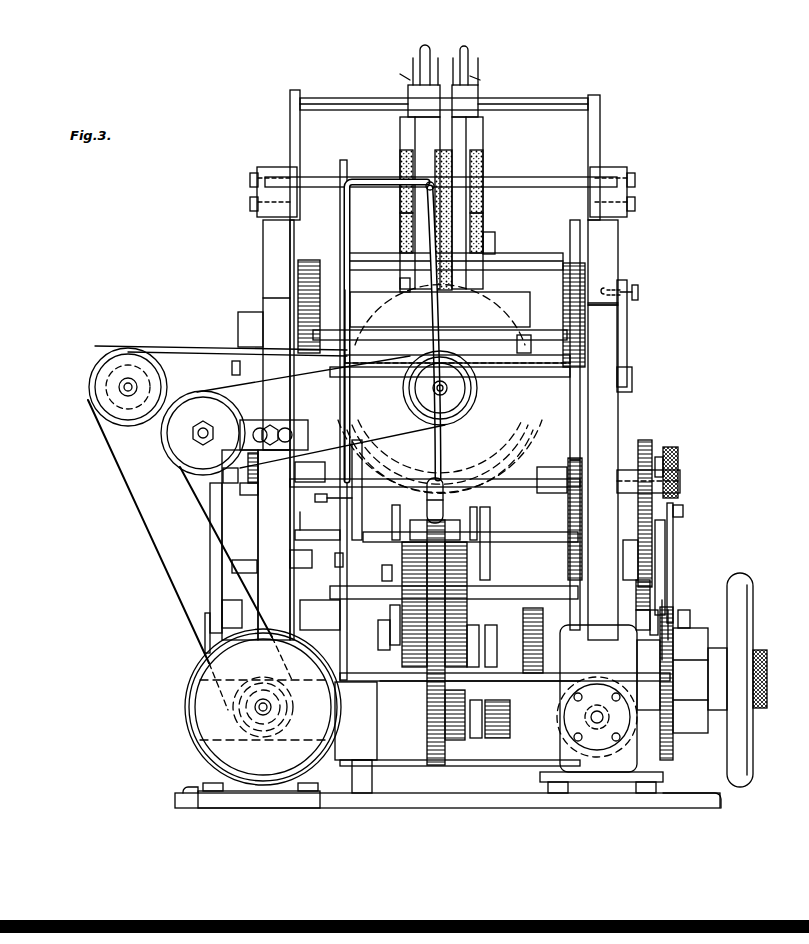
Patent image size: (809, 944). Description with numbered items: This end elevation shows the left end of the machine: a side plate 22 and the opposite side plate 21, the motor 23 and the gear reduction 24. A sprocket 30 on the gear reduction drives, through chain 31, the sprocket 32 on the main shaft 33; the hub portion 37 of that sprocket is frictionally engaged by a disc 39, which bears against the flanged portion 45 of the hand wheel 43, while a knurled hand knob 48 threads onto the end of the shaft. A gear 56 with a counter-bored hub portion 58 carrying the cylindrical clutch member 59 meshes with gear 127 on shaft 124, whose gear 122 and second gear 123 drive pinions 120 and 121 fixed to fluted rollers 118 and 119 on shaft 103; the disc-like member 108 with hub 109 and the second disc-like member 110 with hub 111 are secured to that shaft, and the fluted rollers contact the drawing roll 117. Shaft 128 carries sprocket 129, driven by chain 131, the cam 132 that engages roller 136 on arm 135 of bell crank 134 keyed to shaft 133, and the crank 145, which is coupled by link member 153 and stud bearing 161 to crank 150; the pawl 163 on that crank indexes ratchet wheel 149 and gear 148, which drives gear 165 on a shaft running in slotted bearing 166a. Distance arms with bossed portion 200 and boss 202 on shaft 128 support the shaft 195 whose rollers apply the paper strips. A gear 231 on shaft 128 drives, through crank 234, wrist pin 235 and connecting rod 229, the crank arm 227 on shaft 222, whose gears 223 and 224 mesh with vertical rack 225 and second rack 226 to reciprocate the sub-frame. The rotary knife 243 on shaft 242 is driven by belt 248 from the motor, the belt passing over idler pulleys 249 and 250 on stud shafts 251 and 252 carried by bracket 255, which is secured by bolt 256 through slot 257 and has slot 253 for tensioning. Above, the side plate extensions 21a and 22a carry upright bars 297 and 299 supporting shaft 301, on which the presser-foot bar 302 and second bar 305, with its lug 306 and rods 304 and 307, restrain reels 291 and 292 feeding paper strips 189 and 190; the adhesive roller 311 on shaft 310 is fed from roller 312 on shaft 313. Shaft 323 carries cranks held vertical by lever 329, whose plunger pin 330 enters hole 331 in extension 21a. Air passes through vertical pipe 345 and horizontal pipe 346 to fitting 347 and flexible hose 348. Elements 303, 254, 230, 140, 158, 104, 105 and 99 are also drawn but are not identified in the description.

The rod 307 is at (420, 46).
The rod 304 is at (467, 47).
The second bar 305 is at (400, 74).
The reel 292 is at (413, 68).
The reel 291 is at (478, 66).
The bar 302 is at (480, 76).
The lug 306 is at (408, 92).
The cross head 303 is at (478, 96).
The shaft 301 is at (520, 100).
The upright bar 299 is at (298, 133).
The upright bar 297 is at (600, 133).
The horizontal pipe 346 is at (378, 180).
The roller 311 is at (483, 160).
The shaft 310 is at (525, 182).
The fitting 347 is at (424, 192).
The vertical pipe 345 is at (350, 250).
The roller 312 is at (485, 222).
The second rack 226 is at (310, 262).
The paper strip 190 is at (400, 232).
The paper strip 189 is at (483, 236).
The shaft 313 is at (522, 258).
The vertical rack 225 is at (572, 263).
The side plate extension 22a is at (268, 248).
The side plate extension 21a is at (610, 252).
The flexible hose 348 is at (400, 282).
The block 254 is at (500, 294).
The plunger pin 330 is at (638, 292).
The gear 224 is at (340, 306).
The shaft 222 is at (540, 335).
The hole 331 is at (620, 298).
The crank arm 227 is at (240, 335).
The gear 223 is at (531, 340).
The lever 329 is at (627, 350).
The stud shaft 251 is at (128, 380).
The idler pulley 249 is at (140, 375).
The bearing block 230 is at (232, 368).
The connecting rod 229 is at (248, 388).
The slot 257 is at (282, 410).
The shaft 323 is at (388, 365).
The shaft 242 is at (452, 390).
The rotary knife 243 is at (528, 412).
The side plate 21 is at (607, 430).
The slot 253 is at (93, 400).
The idler pulley 250 is at (168, 440).
The bracket 255 is at (300, 426).
The bolt 256 is at (296, 450).
The stud shaft 252 is at (196, 445).
The wrist pin 235 is at (223, 475).
The gear 231 is at (258, 472).
The boss 202 is at (280, 472).
The crank 234 is at (258, 485).
The side plate 22 is at (256, 545).
The sprocket 129 is at (565, 465).
The shaft 128 is at (612, 434).
The cam 132 is at (368, 484).
The nozzle 140 is at (445, 505).
The drawing roll 117 is at (470, 515).
The shaft 195 is at (525, 488).
The bossed portion 200 is at (559, 519).
The roller 136 is at (392, 520).
The arm 135 is at (350, 507).
The shaft 133 is at (314, 521).
The chain 131 is at (570, 515).
The bell crank 134 is at (350, 540).
The disc-like member 108 is at (390, 544).
The hub 109 is at (384, 568).
The second disc-like member 110 is at (468, 560).
The hub 111 is at (470, 575).
The shaft 103 is at (505, 583).
The gear 165 is at (678, 452).
The bearing 166a is at (678, 476).
The crank 145 is at (680, 492).
The pin 158 is at (683, 510).
The link member 153 is at (673, 530).
The crank 150 is at (666, 565).
The ratchet wheel 149 is at (630, 561).
The pawl 163 is at (633, 595).
The gear 148 is at (633, 613).
The stud bearing 161 is at (652, 618).
The sprocket 32 is at (665, 610).
The hub portion 37 is at (690, 610).
The disc 39 is at (690, 620).
The flanged portion 45 is at (700, 632).
The hand wheel 43 is at (753, 590).
The knurled hand knob 48 is at (767, 665).
The belt 248 is at (158, 548).
The bearing 104 is at (212, 552).
The post 105 is at (243, 565).
The post 99 is at (222, 630).
The main shaft 33 is at (328, 655).
The fluted roller 118 is at (398, 612).
The pinion 120 is at (392, 630).
The gear 56 is at (523, 612).
The second fluted roller 119 is at (472, 618).
The pinion 121 is at (478, 640).
The gear 127 is at (555, 648).
The gear reduction 24 is at (597, 698).
The motor 23 is at (190, 686).
The gear 122 is at (420, 720).
The shaft 124 is at (470, 700).
The cylindrical member 59 is at (476, 723).
The hub portion 58 is at (498, 723).
The second gear 123 is at (435, 760).
The sprocket 30 is at (658, 733).
The chain 31 is at (672, 758).